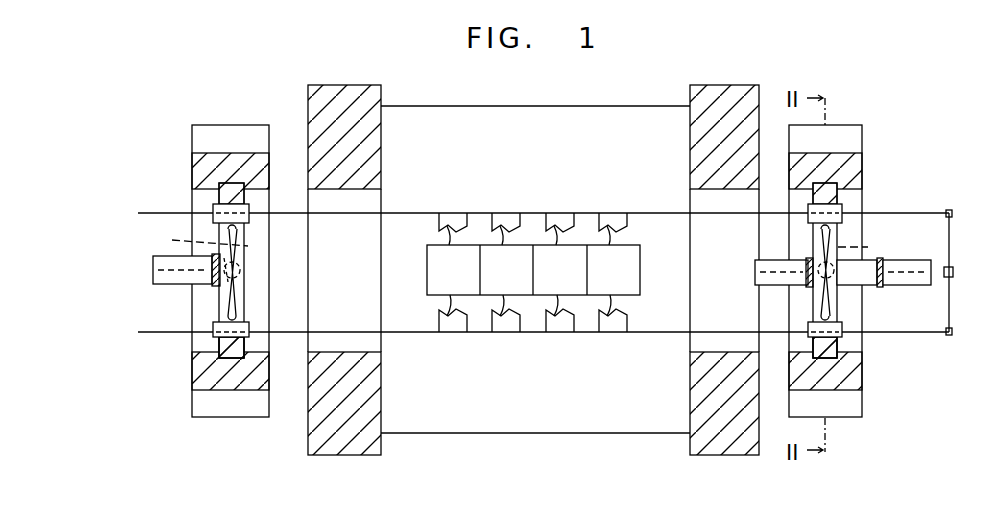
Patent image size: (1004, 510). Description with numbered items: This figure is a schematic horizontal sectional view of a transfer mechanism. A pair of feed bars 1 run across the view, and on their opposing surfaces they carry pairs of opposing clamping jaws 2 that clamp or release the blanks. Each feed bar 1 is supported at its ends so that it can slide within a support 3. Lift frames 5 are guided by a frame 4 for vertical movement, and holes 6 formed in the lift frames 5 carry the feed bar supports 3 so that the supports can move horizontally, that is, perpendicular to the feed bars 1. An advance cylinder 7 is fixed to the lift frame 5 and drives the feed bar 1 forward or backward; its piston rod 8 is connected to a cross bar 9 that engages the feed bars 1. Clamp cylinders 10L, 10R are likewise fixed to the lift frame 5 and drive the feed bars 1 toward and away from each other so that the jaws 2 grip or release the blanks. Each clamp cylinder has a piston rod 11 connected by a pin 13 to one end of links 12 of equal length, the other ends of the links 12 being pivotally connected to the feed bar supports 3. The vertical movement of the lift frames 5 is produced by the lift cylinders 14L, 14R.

The feed bar 1 is at (652, 212).
The clamping jaw 2 is at (533, 272).
The feed bar support 3 is at (213, 211).
The frame 4 is at (200, 160).
The lift frame 5 is at (242, 347).
The hole 6 is at (244, 234).
The advance cylinder 7 is at (914, 286).
The piston rod 8 is at (945, 266).
The cross bar 9 is at (957, 236).
The clamp cylinder 10L is at (176, 286).
The clamp cylinder 10R is at (762, 287).
The piston rod 11 is at (220, 286).
The link 12 is at (240, 242).
The pin 13 is at (244, 268).
The lift cylinder 14L is at (190, 243).
The lift cylinder 14R is at (873, 251).